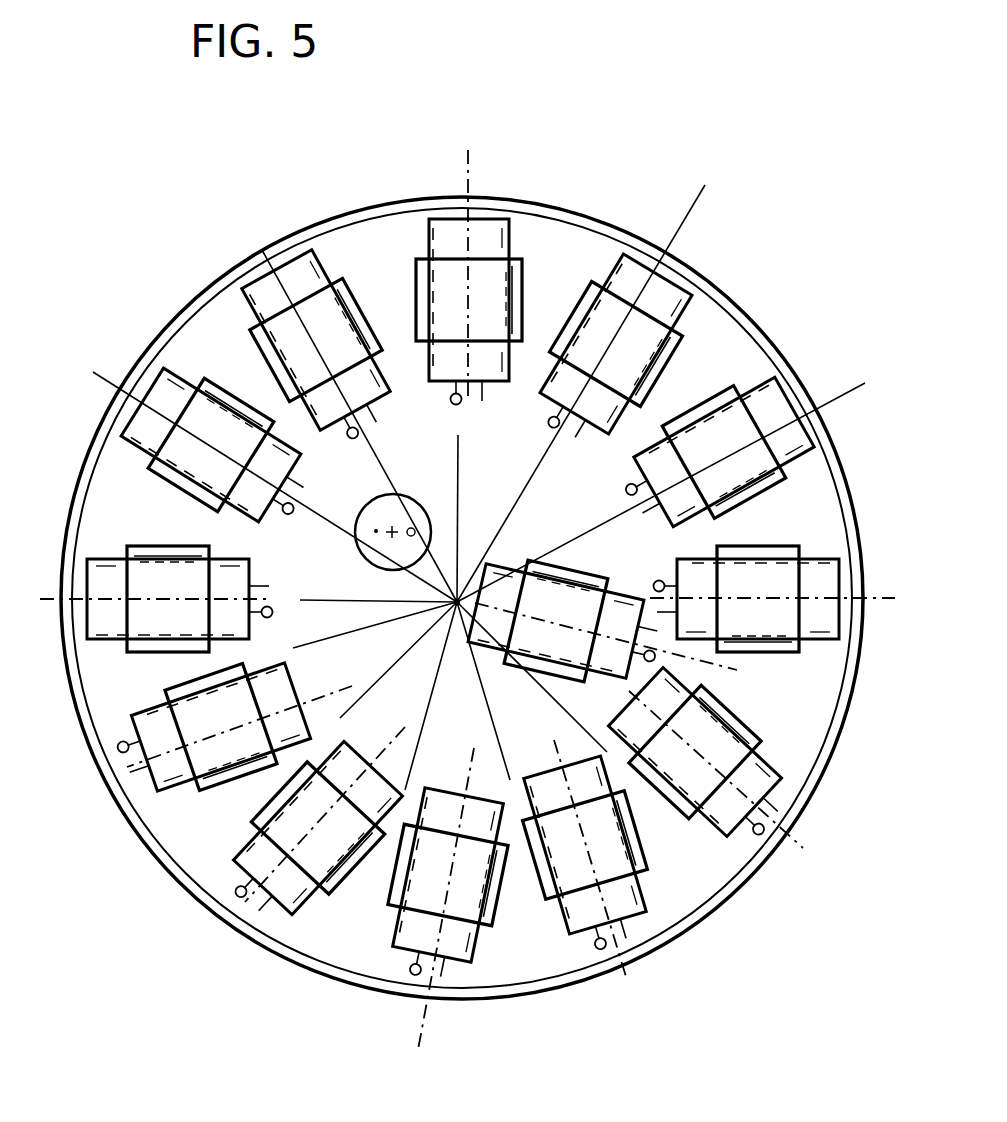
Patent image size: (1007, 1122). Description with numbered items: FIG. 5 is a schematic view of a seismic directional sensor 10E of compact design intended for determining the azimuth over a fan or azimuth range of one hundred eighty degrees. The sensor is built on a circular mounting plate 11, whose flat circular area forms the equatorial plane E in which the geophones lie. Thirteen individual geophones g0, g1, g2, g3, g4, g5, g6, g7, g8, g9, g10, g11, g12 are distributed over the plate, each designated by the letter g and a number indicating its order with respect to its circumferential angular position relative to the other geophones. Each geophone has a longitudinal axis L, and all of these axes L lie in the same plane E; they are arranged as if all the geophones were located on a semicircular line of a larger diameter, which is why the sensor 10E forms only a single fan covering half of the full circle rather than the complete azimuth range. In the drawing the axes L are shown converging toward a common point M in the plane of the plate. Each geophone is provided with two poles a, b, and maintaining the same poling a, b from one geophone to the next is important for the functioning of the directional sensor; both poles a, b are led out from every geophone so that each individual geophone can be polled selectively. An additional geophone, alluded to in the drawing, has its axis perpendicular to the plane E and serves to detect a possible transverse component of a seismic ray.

The directional sensor 10E is at (558, 190).
The circular mounting plate 11 is at (567, 990).
The equatorial plane E is at (348, 913).
The center point M is at (457, 612).
The longitudinal axis L is at (258, 248).
The geophone g0 is at (747, 599).
The geophone g1 is at (210, 731).
The geophone g2 is at (714, 458).
The geophone g3 is at (310, 837).
The geophone g4 is at (610, 354).
The geophone g5 is at (445, 886).
The geophone g6 is at (469, 312).
The geophone g7 is at (588, 856).
The geophone g8 is at (321, 350).
The geophone g9 is at (704, 760).
The geophone g10 is at (220, 451).
The geophone g11 is at (567, 623).
The geophone g12 is at (180, 599).
The pole a is at (622, 490).
The pole b is at (648, 511).